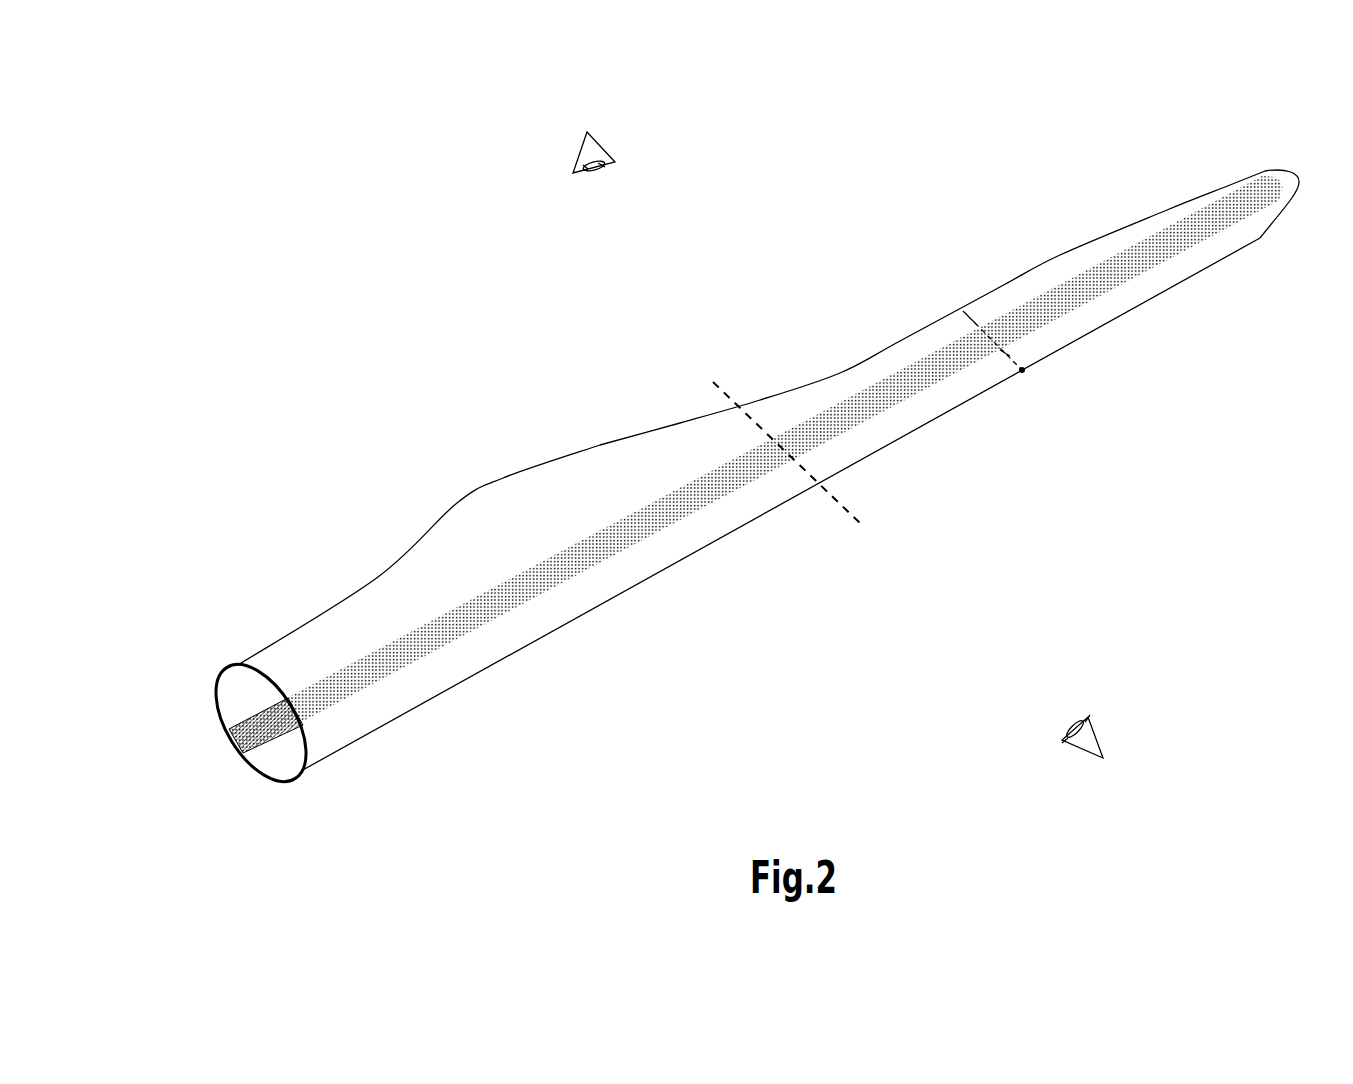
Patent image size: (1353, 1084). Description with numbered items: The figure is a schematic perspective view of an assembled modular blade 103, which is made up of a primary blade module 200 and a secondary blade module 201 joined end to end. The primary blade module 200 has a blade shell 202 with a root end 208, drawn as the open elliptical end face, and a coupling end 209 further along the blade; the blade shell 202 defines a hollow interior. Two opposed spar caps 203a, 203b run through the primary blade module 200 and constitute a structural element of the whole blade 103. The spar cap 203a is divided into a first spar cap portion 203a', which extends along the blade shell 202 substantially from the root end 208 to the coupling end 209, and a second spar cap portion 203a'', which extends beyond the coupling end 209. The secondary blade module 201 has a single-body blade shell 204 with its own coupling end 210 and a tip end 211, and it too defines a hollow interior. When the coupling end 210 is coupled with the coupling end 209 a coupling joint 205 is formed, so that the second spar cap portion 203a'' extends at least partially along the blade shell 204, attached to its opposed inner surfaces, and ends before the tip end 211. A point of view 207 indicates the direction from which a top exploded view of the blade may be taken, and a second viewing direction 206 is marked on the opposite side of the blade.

The modular blade 103 is at (698, 460).
The primary blade module 200 is at (698, 441).
The secondary blade module 201 is at (1126, 162).
The blade shell 202 is at (628, 460).
The spar cap 203a is at (764, 464).
The first spar cap portion 203a' is at (466, 652).
The second spar cap portion 203a'' is at (1200, 259).
The spar cap 203b is at (232, 740).
The blade shell 204 is at (1018, 285).
The coupling joint 205 is at (1022, 370).
The viewing direction 206 is at (1119, 759).
The point of view 207 is at (566, 150).
The root end 208 is at (222, 677).
The coupling end 209 is at (975, 323).
The coupling end 210 is at (1005, 353).
The tip end 211 is at (1298, 178).